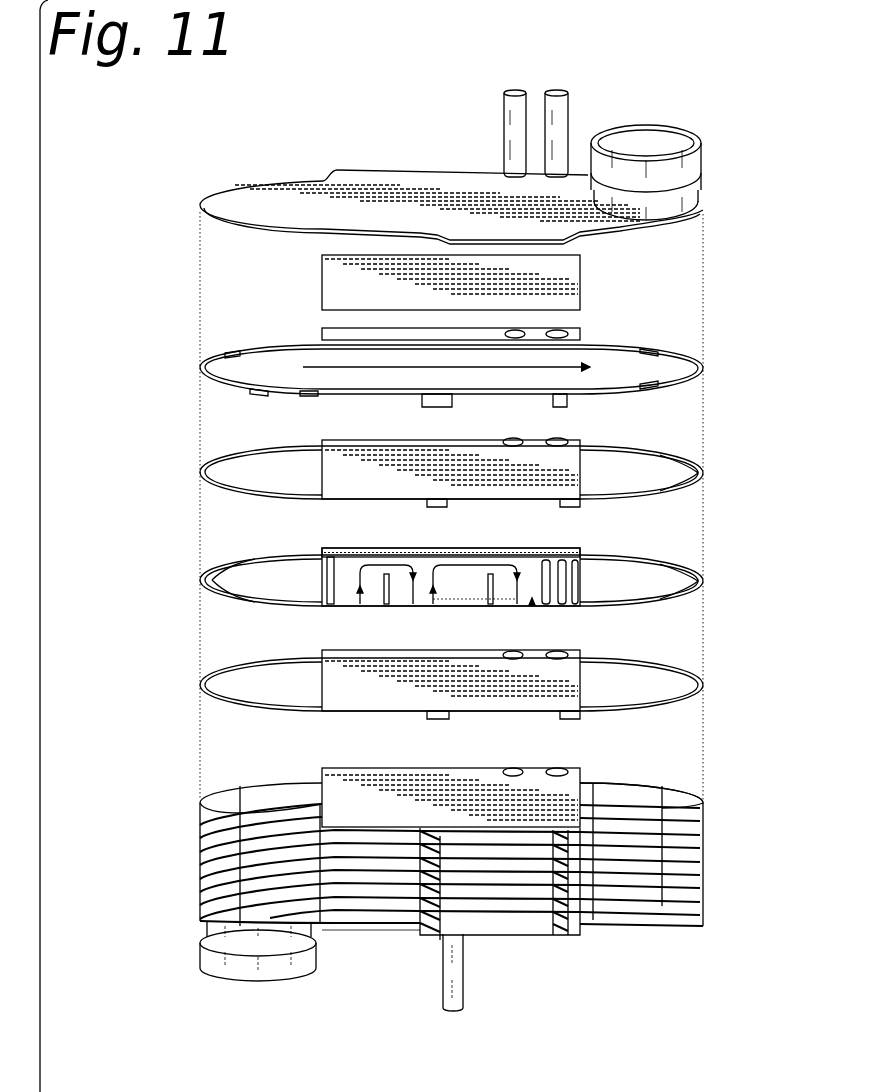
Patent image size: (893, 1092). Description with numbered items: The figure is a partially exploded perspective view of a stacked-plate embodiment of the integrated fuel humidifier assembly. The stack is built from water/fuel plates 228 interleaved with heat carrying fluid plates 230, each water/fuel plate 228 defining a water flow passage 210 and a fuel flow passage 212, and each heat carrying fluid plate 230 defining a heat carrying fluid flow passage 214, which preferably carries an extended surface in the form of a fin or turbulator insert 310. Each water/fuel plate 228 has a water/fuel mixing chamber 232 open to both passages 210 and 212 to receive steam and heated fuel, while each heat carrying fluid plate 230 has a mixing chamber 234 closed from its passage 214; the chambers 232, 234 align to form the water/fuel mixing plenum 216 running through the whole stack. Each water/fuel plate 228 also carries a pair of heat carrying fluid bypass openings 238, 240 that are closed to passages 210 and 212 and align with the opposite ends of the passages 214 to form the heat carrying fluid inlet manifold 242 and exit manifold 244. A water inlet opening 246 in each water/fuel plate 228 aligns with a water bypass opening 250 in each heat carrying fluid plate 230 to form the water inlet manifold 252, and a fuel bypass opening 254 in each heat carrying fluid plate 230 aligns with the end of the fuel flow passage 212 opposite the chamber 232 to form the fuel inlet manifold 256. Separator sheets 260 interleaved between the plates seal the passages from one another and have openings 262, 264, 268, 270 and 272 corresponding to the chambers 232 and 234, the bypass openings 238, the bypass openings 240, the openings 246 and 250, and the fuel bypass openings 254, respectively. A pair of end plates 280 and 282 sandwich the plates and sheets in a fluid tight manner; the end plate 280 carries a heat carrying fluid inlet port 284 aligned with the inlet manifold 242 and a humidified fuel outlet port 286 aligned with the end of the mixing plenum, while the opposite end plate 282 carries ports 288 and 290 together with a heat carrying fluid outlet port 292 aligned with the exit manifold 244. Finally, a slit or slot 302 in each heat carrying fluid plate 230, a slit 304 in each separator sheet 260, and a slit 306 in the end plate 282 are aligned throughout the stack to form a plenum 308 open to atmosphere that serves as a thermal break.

The water flow passage 210 is at (357, 577).
The fuel flow passage 212 is at (560, 604).
The heat carrying fluid flow passage 214 is at (327, 367).
The water/fuel mixing plenum 216 is at (523, 832).
The water/fuel plate 228 is at (200, 581).
The heat carrying fluid plate 230 is at (200, 365).
The water/fuel mixing chamber 232 is at (433, 605).
The water/fuel mixing chamber 234 is at (527, 396).
The heat carrying fluid bypass opening 238 is at (227, 581).
The heat carrying fluid bypass opening 240 is at (683, 584).
The heat carrying fluid inlet manifold 242 is at (230, 790).
The heat carrying fluid exit manifold 244 is at (637, 798).
The water inlet opening 246 is at (530, 548).
The water bypass opening 250 is at (517, 334).
The water inlet manifold 252 is at (517, 770).
The fuel bypass opening 254 is at (558, 335).
The fuel inlet manifold 256 is at (567, 770).
The separator sheet 260 is at (200, 480).
The opening 262 is at (457, 501).
The opening 264 is at (230, 470).
The opening 268 is at (680, 472).
The opening 270 is at (513, 442).
The opening 272 is at (570, 442).
The end plate 280 is at (360, 934).
The end plate 282 is at (200, 205).
The heat carrying fluid inlet connection or port 284 is at (210, 957).
The humidified fuel outlet connection or port 286 is at (440, 984).
The tube 288 is at (504, 118).
The tube 290 is at (558, 98).
The heat carrying fluid outlet connection or port 292 is at (688, 176).
The slit or slot 302 is at (323, 332).
The slit or slot 304 is at (343, 443).
The slit or slot 306 is at (353, 182).
The plenum 308 is at (393, 772).
The fin or turbulator insert 310 is at (320, 262).